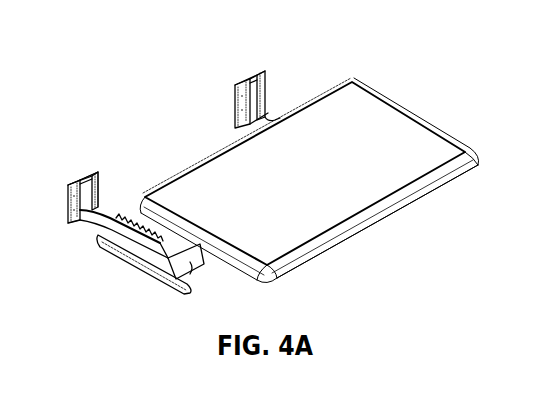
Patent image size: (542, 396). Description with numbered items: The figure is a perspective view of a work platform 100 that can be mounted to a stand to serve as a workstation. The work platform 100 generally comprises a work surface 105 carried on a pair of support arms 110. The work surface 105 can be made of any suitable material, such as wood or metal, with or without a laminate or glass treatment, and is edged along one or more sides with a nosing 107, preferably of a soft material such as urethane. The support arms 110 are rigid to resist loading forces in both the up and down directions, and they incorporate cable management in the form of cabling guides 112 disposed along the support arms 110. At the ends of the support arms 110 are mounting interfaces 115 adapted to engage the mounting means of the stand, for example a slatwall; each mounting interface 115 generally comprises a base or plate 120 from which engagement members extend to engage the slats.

The work platform 100 is at (198, 66).
The work surface 105 is at (387, 140).
The nosing 107 is at (375, 213).
The support arms 110 is at (270, 120).
The cabling guides 112 is at (132, 208).
The mounting interfaces 115 is at (78, 158).
The plate 120 is at (60, 223).